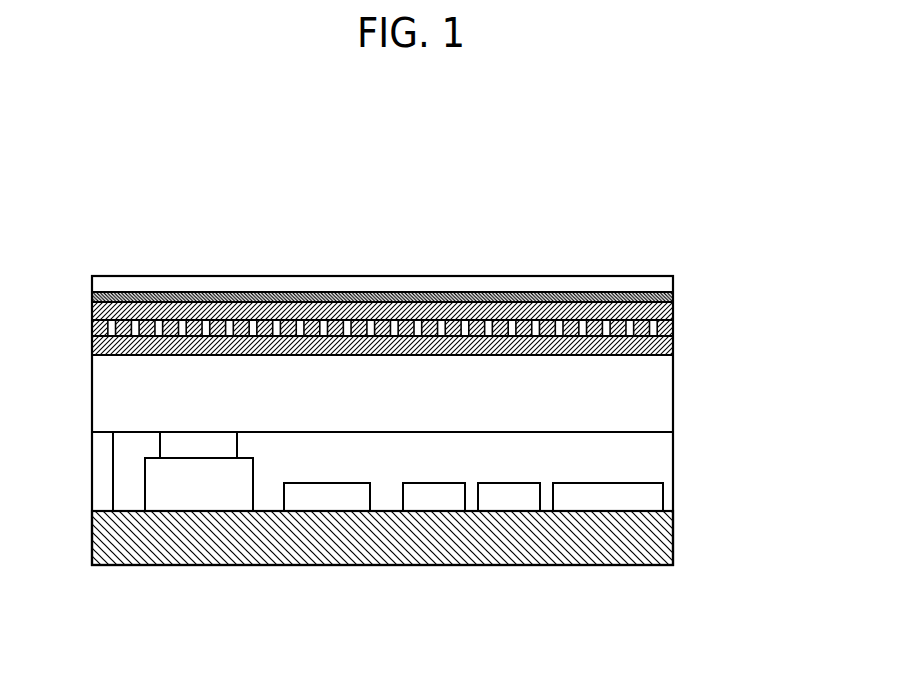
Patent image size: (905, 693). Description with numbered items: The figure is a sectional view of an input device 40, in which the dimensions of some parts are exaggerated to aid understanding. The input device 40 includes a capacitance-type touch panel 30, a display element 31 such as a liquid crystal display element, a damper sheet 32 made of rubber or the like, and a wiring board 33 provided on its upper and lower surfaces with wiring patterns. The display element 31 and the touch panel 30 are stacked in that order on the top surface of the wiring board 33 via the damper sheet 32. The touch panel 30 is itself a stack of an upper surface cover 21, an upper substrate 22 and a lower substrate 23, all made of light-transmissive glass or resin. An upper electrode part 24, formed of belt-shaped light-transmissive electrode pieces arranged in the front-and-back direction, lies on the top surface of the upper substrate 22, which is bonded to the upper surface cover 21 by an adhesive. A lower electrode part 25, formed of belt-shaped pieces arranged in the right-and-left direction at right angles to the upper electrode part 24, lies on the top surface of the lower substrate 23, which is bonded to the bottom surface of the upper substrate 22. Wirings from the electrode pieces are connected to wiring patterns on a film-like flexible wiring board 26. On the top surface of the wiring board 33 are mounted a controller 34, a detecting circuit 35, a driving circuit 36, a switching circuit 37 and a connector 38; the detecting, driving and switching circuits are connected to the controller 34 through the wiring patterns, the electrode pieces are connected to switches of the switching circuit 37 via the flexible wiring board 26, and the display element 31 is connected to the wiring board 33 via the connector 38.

The input device 40 is at (588, 233).
The touch panel 30 is at (788, 235).
The upper surface cover 21 is at (657, 285).
The upper electrode part 24 is at (673, 295).
The upper substrate 22 is at (673, 315).
The lower electrode part 25 is at (673, 330).
The lower substrate 23 is at (673, 348).
The display element 31 is at (663, 408).
The damper sheet 32 is at (102, 473).
The wiring board 33 is at (673, 532).
The flexible wiring board 26 is at (183, 447).
The connector 38 is at (190, 492).
The switching circuit 37 is at (320, 498).
The driving circuit 36 is at (430, 498).
The detecting circuit 35 is at (505, 498).
The controller 34 is at (602, 498).